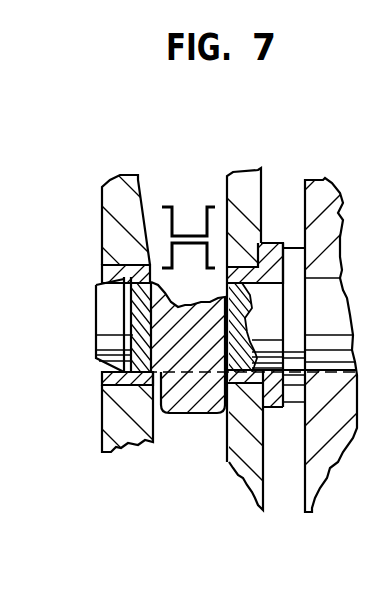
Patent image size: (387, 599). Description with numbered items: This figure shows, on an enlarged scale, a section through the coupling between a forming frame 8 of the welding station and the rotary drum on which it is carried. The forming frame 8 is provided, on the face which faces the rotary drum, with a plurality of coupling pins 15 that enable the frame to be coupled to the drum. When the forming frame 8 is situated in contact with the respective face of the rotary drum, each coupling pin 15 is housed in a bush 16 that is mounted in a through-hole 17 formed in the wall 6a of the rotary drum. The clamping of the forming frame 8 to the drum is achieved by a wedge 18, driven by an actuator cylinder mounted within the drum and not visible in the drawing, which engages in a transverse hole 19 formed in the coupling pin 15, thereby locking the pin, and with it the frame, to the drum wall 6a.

The wall of the rotary drum 6a is at (118, 430).
The forming frame 8 is at (303, 455).
The coupling pin 15 is at (95, 356).
The bush 16 is at (268, 243).
The through-hole 17 is at (106, 282).
The wedge 18 is at (209, 188).
The transverse hole 19 is at (156, 368).